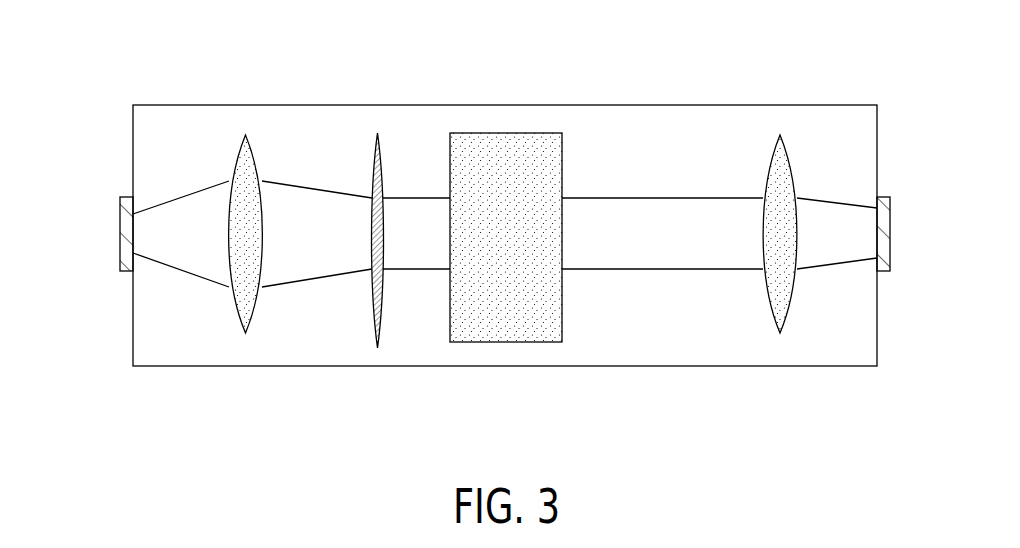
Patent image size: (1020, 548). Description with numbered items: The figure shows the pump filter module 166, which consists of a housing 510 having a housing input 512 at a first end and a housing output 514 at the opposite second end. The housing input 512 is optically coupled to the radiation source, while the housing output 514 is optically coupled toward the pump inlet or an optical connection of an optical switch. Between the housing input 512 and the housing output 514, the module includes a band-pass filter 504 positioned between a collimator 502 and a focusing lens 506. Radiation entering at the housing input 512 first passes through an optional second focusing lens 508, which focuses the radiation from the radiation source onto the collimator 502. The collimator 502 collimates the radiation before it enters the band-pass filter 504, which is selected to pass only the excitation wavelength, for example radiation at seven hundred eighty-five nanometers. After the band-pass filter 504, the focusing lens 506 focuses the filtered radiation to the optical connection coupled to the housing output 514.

The pump filter module 166 is at (765, 86).
The housing 510 is at (808, 366).
The housing input 512 is at (120, 258).
The housing output 514 is at (890, 260).
The second focusing lens 508 is at (258, 310).
The collimator 502 is at (381, 308).
The band-pass filter 504 is at (563, 312).
The focusing lens 506 is at (793, 312).